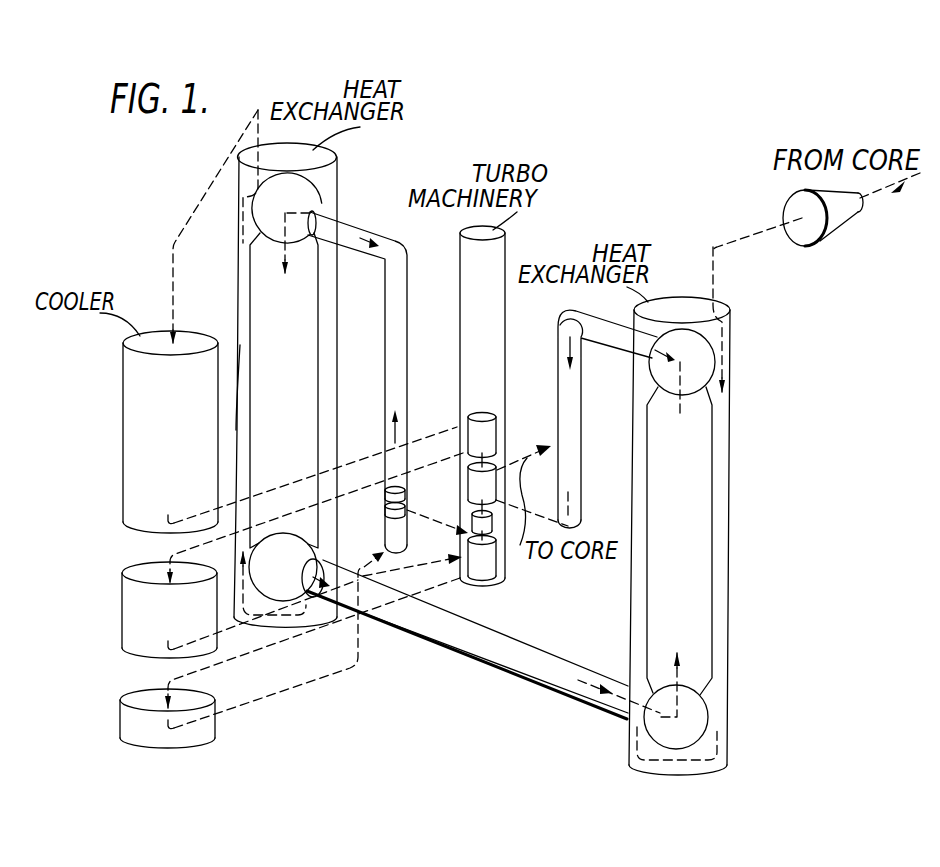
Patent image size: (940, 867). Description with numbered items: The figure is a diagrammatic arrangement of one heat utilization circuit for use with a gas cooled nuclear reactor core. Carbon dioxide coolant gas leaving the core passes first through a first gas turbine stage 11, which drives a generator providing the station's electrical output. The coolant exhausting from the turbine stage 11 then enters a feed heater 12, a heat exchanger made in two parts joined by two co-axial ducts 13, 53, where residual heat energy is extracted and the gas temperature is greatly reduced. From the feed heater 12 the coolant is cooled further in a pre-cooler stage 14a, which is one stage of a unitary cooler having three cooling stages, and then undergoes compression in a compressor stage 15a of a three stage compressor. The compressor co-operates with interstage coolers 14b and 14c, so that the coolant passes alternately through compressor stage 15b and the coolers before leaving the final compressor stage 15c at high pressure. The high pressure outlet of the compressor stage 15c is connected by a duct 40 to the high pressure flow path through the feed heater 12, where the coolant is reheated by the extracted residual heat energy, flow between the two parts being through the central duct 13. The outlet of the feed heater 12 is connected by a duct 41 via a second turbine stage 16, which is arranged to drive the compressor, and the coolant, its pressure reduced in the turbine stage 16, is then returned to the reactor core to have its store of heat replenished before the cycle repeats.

The first gas turbine stage 11 is at (850, 212).
The feed heater 12 is at (313, 340).
The co-axial duct 13 is at (527, 642).
The pre-cooler stage 14a is at (130, 432).
The interstage cooler 14b is at (127, 592).
The interstage cooler 14c is at (125, 714).
The compressor stage 15a is at (500, 423).
The compressor stage 15b is at (487, 570).
The final compressor stage 15c is at (466, 527).
The second turbine stage 16 is at (500, 463).
The duct 40 is at (400, 340).
The duct 41 is at (572, 422).
The co-axial duct 53 is at (455, 640).